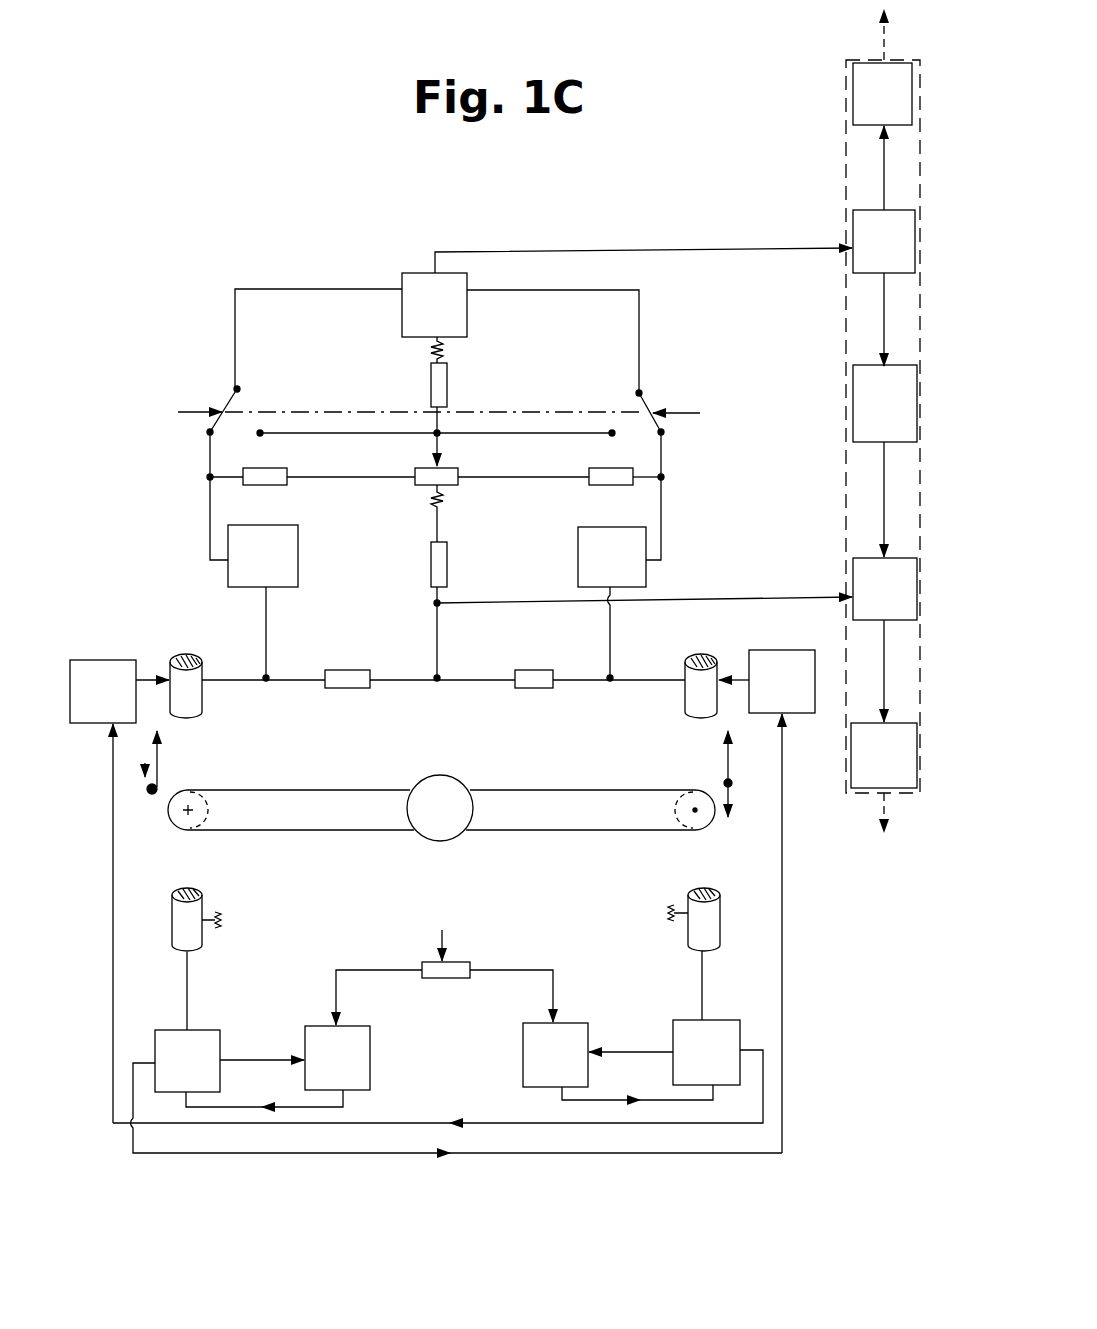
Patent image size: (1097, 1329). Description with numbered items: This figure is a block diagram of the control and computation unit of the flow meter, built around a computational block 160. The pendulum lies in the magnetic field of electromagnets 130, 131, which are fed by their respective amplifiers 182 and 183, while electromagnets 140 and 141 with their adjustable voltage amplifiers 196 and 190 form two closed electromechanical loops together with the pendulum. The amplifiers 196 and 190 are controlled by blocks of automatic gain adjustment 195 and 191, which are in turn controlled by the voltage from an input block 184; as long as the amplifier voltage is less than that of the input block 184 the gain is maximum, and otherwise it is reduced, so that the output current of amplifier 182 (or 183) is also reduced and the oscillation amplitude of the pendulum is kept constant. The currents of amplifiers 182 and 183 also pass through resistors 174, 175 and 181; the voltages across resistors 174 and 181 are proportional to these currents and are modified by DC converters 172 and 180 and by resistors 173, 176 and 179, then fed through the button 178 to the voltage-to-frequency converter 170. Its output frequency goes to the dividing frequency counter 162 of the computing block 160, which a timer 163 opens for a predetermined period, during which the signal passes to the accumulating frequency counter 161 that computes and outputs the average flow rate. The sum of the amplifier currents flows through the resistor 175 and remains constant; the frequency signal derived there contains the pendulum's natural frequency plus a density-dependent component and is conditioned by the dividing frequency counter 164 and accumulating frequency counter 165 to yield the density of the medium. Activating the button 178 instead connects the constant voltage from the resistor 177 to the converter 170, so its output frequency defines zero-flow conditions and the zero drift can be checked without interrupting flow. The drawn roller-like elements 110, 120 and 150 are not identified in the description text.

The drive roller 110 is at (665, 829).
The idler roller 120 is at (223, 833).
The electromagnet 130 is at (683, 698).
The electromagnet 131 is at (202, 705).
The electromagnet 140 is at (720, 897).
The electromagnet 141 is at (202, 902).
The pinch roller 150 is at (452, 841).
The computational block 160 is at (846, 165).
The accumulating frequency counter 161 is at (853, 93).
The dividing frequency counter 162 is at (853, 258).
The timer 163 is at (853, 397).
The dividing frequency counter 164 is at (853, 573).
The accumulating frequency counter 165 is at (851, 770).
The voltage-to-frequency converter 170 is at (405, 272).
The DC converter 172 is at (646, 573).
The resistor 173 is at (600, 470).
The resistor 174 is at (523, 672).
The resistor 175 is at (447, 552).
The resistor 176 is at (452, 468).
The resistor 177 is at (447, 382).
The button 178 is at (222, 400).
The resistor 179 is at (268, 467).
The DC converter 180 is at (298, 548).
The resistor 181 is at (333, 668).
The amplifier 182 is at (793, 650).
The amplifier 183 is at (93, 660).
The input block 184 is at (455, 958).
The adjustable voltage amplifier 190 is at (197, 1030).
The block of automatic gain adjustment 191 is at (353, 1026).
The block of automatic gain adjustment 195 is at (572, 1023).
The adjustable voltage amplifier 196 is at (718, 1020).